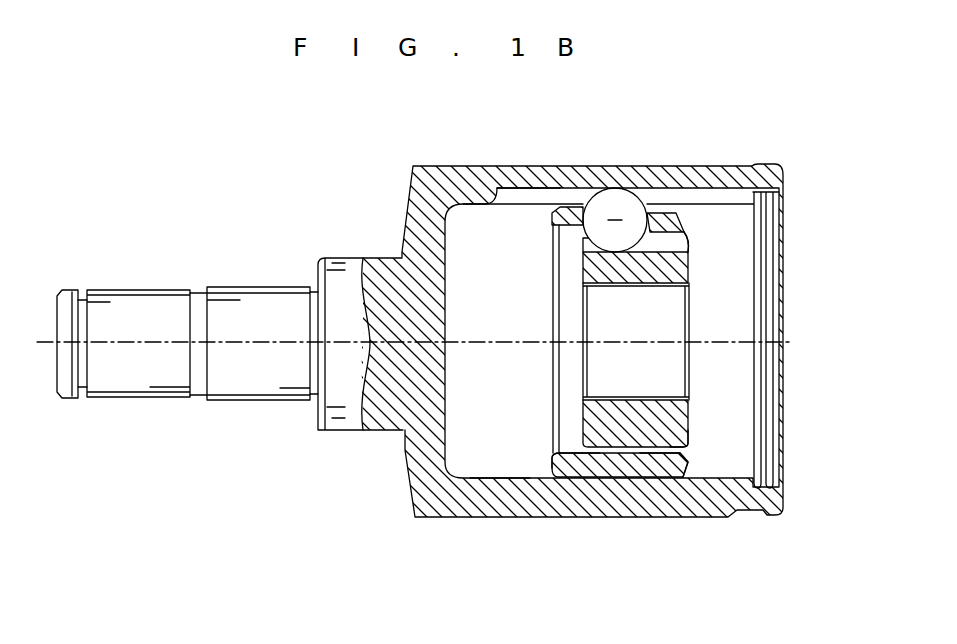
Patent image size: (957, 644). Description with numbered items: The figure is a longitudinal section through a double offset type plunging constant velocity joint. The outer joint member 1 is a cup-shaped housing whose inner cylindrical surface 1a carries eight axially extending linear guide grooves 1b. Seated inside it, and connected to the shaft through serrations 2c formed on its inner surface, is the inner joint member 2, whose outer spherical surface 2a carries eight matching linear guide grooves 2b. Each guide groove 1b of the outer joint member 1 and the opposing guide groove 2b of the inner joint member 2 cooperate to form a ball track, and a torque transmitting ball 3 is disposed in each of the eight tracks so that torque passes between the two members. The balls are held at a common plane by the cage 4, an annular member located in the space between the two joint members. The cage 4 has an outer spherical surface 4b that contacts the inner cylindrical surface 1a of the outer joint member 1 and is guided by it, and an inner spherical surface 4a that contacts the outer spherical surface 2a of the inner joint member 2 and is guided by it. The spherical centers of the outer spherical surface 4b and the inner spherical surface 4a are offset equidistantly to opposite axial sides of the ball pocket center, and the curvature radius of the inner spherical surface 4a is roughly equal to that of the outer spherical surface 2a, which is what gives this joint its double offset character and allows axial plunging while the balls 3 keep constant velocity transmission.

The outer joint member 1 is at (435, 188).
The inner cylindrical surface 1a is at (508, 478).
The linear guide grooves 1b is at (532, 188).
The inner joint member 2 is at (635, 339).
The outer spherical surface 2a is at (678, 450).
The linear guide grooves 2b is at (686, 236).
The serrations 2c is at (605, 288).
The torque transmitting balls 3 is at (600, 205).
The cage 4 is at (603, 343).
The inner spherical surface 4a is at (647, 447).
The outer spherical surface 4b is at (565, 470).